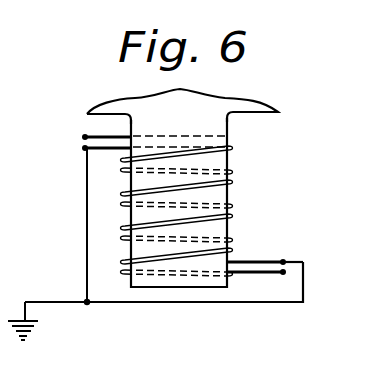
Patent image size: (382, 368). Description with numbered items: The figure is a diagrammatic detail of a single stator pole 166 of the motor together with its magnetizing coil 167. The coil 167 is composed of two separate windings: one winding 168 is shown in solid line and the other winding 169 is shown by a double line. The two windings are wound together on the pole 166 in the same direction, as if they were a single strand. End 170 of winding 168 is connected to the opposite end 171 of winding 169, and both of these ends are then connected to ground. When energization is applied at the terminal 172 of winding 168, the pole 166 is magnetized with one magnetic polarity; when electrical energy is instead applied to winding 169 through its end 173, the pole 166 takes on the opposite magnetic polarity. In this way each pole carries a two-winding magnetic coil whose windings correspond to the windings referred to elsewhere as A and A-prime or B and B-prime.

The stator pole 166 is at (209, 122).
The magnetizing coil 167 is at (240, 177).
The winding 168 is at (107, 140).
The winding 169 is at (107, 140).
The end of winding 170 is at (283, 262).
The opposite end of winding 171 is at (83, 150).
The terminal 172 is at (82, 137).
The end of winding 173 is at (283, 272).